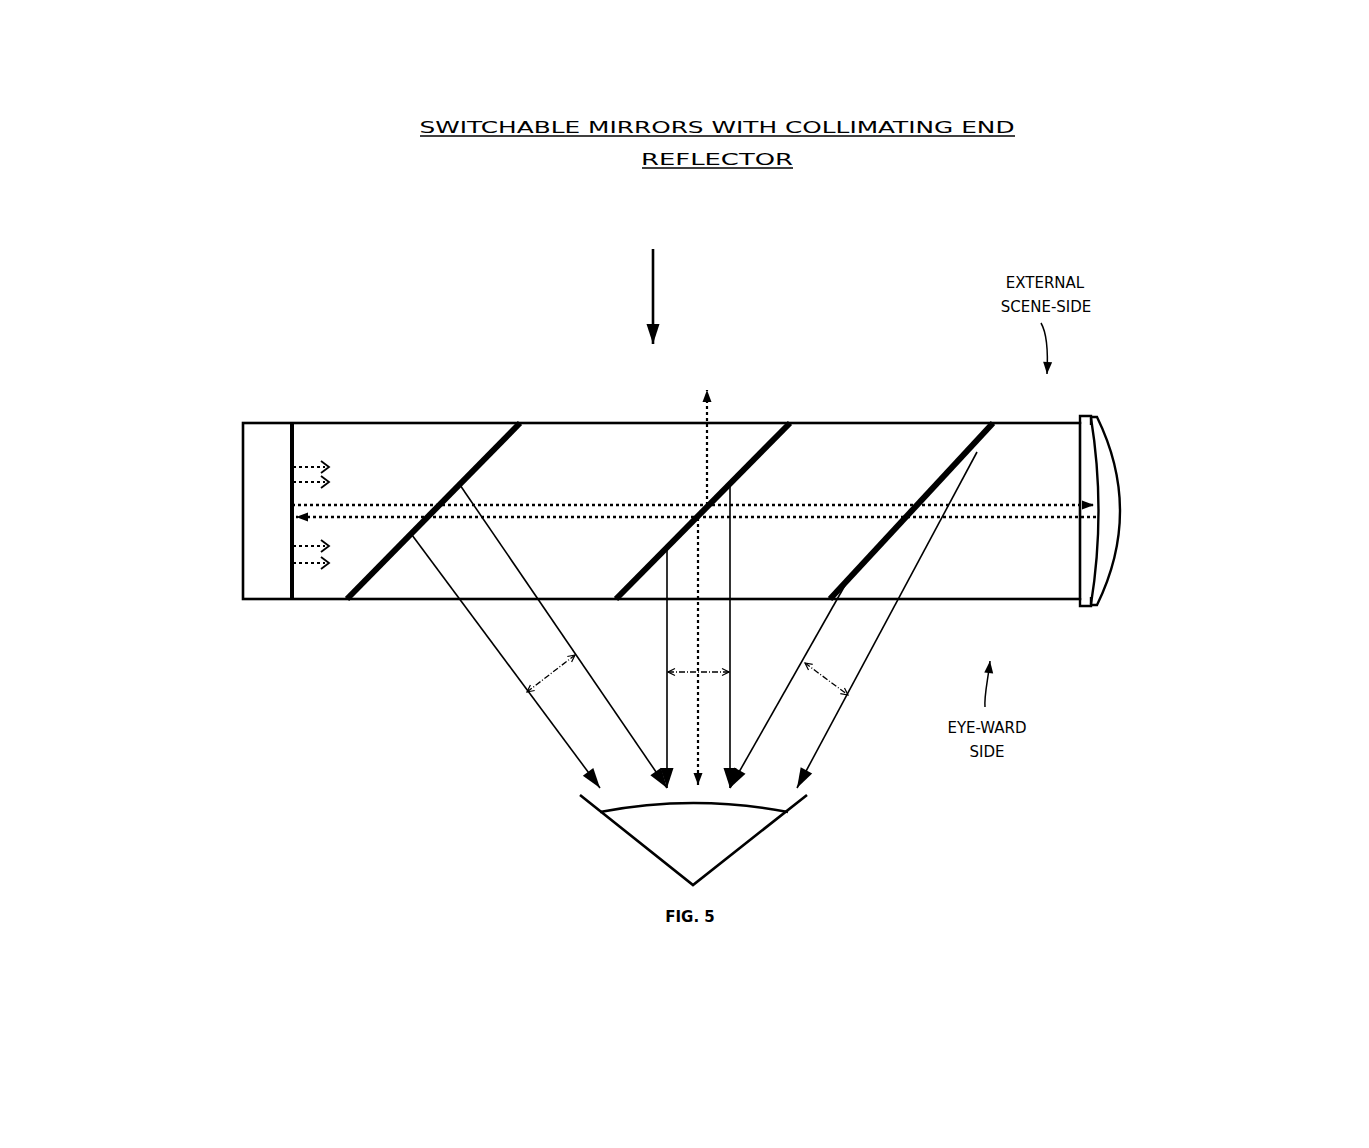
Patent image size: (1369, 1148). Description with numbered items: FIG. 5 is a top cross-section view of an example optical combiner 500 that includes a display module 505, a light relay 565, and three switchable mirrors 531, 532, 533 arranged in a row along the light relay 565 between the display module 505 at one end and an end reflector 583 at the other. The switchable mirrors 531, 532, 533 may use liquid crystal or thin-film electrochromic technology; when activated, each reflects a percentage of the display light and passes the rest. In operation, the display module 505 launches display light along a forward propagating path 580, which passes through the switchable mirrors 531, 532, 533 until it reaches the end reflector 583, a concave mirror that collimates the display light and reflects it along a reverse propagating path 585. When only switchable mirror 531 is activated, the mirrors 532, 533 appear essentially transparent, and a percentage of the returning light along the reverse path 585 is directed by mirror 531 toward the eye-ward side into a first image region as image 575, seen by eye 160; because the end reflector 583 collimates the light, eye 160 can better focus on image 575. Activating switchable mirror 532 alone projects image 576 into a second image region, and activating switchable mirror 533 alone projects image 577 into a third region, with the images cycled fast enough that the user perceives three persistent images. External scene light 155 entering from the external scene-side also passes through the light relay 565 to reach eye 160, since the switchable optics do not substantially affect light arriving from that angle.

The optical combiner 500 is at (1090, 220).
The external scene light 155 is at (653, 270).
The display module 505 is at (260, 422).
The switchable mirror 531 is at (496, 442).
The switchable mirror 532 is at (767, 443).
The switchable mirror 533 is at (977, 452).
The light relay 565 is at (317, 602).
The forward propagating path 580 is at (843, 503).
The reverse propagating path 585 is at (1052, 519).
The end reflector 583 is at (1102, 560).
The image 575 is at (527, 690).
The image 576 is at (700, 670).
The image 577 is at (825, 680).
The eye 160 is at (684, 855).